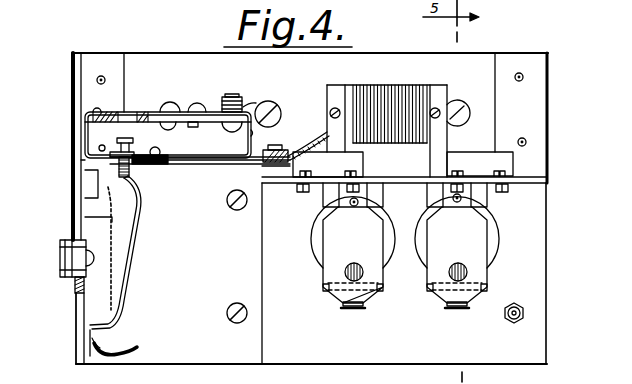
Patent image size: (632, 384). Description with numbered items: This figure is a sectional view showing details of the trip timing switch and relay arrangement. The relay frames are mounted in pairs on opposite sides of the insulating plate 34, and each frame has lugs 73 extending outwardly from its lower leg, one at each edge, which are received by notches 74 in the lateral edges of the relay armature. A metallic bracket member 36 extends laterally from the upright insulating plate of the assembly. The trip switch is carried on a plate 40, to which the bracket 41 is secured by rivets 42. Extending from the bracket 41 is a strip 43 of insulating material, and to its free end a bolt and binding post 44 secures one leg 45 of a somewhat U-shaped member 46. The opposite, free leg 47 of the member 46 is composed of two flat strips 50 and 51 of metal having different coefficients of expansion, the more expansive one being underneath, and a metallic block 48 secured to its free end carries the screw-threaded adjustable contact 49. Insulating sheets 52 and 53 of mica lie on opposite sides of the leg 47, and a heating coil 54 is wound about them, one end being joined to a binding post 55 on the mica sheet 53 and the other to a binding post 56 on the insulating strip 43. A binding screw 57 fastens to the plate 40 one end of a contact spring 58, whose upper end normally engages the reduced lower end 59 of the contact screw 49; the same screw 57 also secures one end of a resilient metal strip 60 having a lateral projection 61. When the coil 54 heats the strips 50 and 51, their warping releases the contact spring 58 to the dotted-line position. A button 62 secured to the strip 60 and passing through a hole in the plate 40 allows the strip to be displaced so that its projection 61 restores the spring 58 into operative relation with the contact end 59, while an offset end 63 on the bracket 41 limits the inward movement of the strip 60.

The plate 34 is at (549, 256).
The bracket member 36 is at (72, 80).
The plate 40 is at (80, 189).
The bracket 41 is at (133, 112).
The rivets 42 is at (73, 163).
The strip of insulating material 43 is at (207, 110).
The bolt and binding post 44 is at (236, 98).
The leg 45 is at (244, 107).
The U-shaped member 46 is at (283, 100).
The leg 47 is at (190, 164).
The metallic block 48 is at (112, 153).
The adjustable contact 49 is at (130, 165).
The flat strip 50 is at (248, 147).
The flat strip 51 is at (250, 132).
The insulating sheet 52 is at (216, 153).
The insulating sheet 53 is at (216, 164).
The heating coil 54 is at (243, 164).
The binding post 55 is at (268, 170).
The binding post 56 is at (177, 102).
The binding screw 57 is at (100, 331).
The contact spring 58 is at (136, 208).
The reduced lower end 59 is at (131, 184).
The resilient metal strip 60 is at (78, 323).
The lateral projection 61 is at (112, 222).
The button 62 is at (65, 258).
The offset end 63 is at (96, 196).
The lugs 73 is at (327, 288).
The notches 74 is at (338, 296).